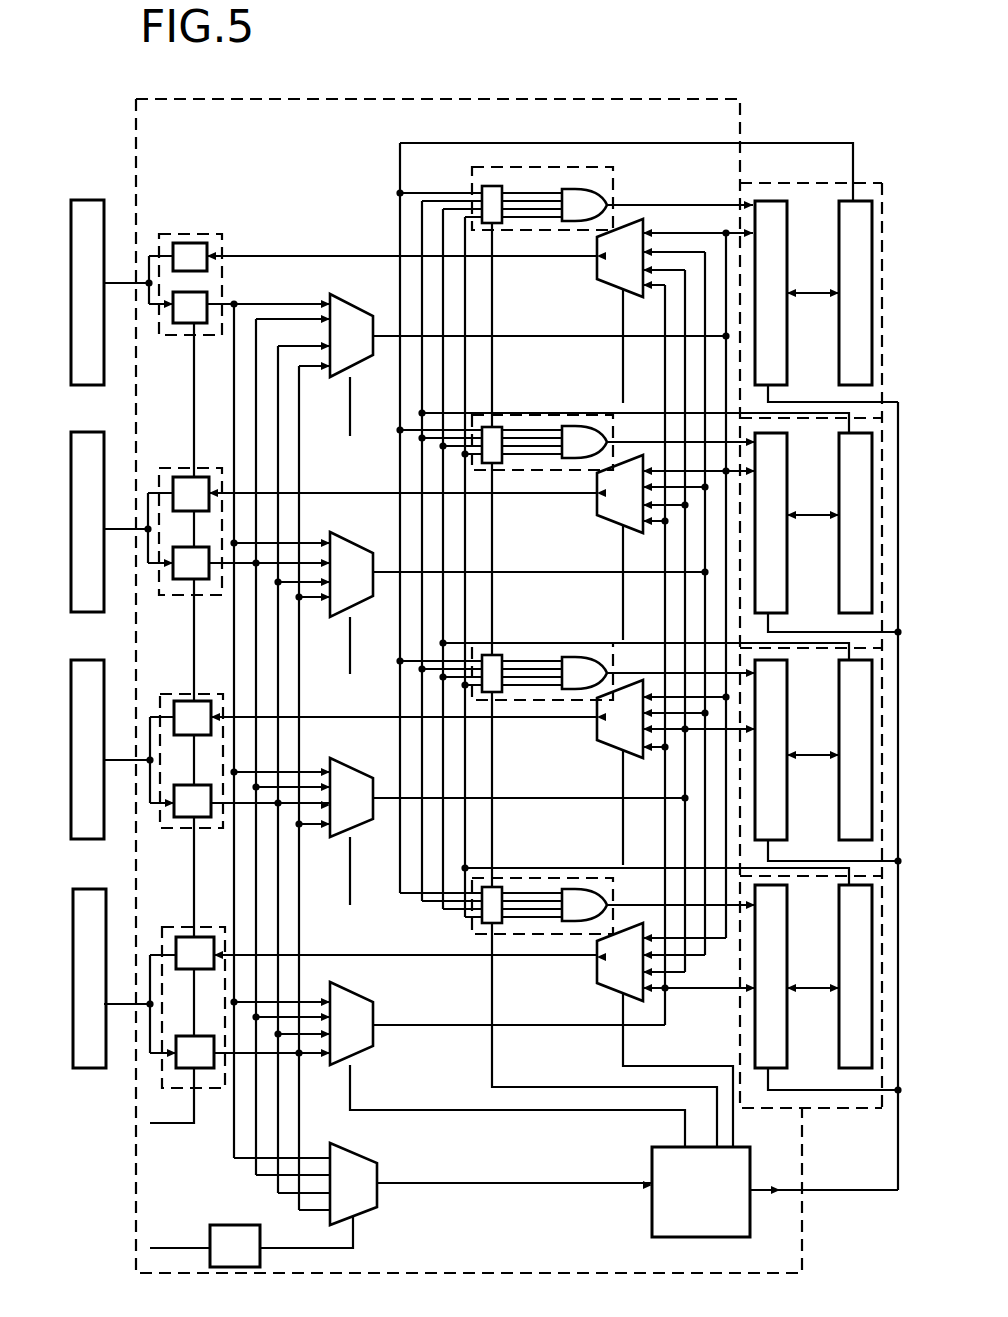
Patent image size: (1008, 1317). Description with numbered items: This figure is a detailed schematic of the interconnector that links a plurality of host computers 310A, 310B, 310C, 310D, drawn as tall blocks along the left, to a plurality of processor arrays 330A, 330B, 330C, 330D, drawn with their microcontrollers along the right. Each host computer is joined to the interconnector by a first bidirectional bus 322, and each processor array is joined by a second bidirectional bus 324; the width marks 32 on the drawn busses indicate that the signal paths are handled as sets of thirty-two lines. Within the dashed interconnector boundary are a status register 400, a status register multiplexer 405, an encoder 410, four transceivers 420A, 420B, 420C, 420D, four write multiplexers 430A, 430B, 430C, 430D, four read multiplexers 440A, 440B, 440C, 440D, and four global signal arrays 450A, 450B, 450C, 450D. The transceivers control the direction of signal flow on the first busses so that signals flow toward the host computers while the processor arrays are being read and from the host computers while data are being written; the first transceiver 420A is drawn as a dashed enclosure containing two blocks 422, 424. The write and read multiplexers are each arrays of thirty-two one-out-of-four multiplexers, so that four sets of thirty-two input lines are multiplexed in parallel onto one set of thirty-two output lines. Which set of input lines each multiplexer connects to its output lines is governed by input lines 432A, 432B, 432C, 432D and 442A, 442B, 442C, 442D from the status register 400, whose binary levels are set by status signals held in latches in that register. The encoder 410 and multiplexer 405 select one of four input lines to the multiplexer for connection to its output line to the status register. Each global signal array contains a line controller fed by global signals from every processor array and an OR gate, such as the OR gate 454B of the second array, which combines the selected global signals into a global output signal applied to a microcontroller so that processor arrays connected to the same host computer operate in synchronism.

The host computer 310A is at (92, 189).
The host computer 310B is at (86, 432).
The host computer 310C is at (86, 660).
The host computer 310D is at (92, 892).
The 32-bit bus 32 is at (134, 274).
The first bidirectional bus 322 is at (137, 533).
The transceiver 420A is at (232, 240).
The transceiver 420B is at (210, 465).
The transceiver 420C is at (182, 690).
The transceiver 420D is at (182, 920).
The output register 422 is at (188, 243).
The input register 424 is at (190, 323).
The write multiplexer 430A is at (350, 310).
The write multiplexer 430B is at (356, 550).
The write multiplexer 430C is at (354, 772).
The write multiplexer 430D is at (360, 1012).
The input line 432A is at (350, 436).
The input line 432B is at (350, 674).
The input line 432C is at (350, 905).
The input line 432D is at (357, 1074).
The read multiplexer 440A is at (614, 290).
The read multiplexer 440B is at (612, 530).
The read multiplexer 440C is at (612, 748).
The read multiplexer 440D is at (598, 976).
The input line 442A is at (623, 358).
The input line 442B is at (623, 592).
The input line 442C is at (623, 808).
The input line 442D is at (623, 1030).
The global signal array 450A is at (612, 190).
The global signal array 450B is at (575, 442).
The global signal array 450C is at (570, 730).
The global signal array 450D is at (570, 934).
The OR gate 454B is at (562, 414).
The processor array 330A is at (797, 192).
The processor array 330B is at (659, 522).
The processor array 330C is at (670, 751).
The processor array 330D is at (681, 978).
The second bidirectional bus 324 is at (698, 988).
The status register 400 is at (735, 1240).
The status register multiplexer 405 is at (362, 1212).
The encoder 410 is at (252, 1228).